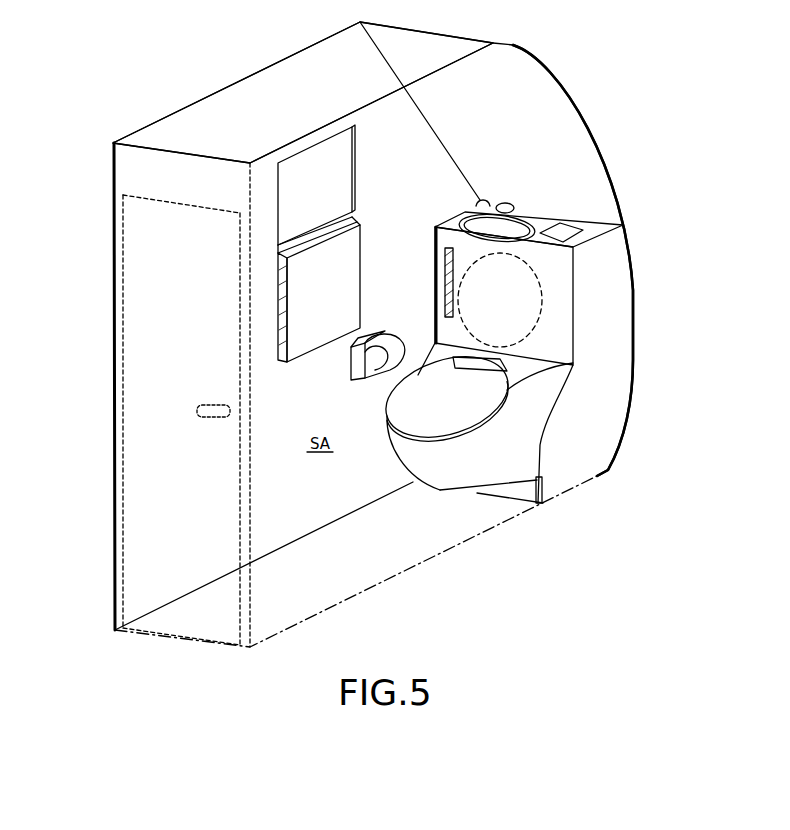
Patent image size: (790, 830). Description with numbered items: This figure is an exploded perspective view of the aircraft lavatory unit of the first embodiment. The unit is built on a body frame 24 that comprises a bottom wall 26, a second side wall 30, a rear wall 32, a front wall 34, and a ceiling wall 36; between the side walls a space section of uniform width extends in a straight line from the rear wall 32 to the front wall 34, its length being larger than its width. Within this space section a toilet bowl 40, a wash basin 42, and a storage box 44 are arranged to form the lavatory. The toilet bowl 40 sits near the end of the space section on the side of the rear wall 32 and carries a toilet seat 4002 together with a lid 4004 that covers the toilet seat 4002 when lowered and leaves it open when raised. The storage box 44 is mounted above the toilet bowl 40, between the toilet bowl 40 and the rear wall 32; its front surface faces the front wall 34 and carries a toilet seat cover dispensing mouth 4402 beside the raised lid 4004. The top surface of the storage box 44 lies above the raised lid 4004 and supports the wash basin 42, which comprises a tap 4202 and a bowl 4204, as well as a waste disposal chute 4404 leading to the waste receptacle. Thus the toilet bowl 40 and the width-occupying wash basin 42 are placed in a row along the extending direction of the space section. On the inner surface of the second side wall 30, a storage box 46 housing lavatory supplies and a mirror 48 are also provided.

The body frame 24 is at (587, 130).
The bottom wall 26 is at (358, 560).
The second side wall 30 is at (217, 133).
The rear wall 32 is at (521, 108).
The front wall 34 is at (167, 377).
The ceiling wall 36 is at (298, 78).
The toilet bowl 40 is at (530, 465).
The wash basin 42 is at (543, 200).
The storage box 44 is at (557, 297).
The storage box 46 is at (300, 298).
The mirror 48 is at (290, 192).
The toilet seat 4002 is at (463, 462).
The lid 4004 is at (435, 427).
The tap 4202 is at (503, 202).
The bowl 4204 is at (482, 200).
The toilet seat cover dispensing mouth 4402 is at (435, 283).
The waste disposal chute 4404 is at (573, 220).